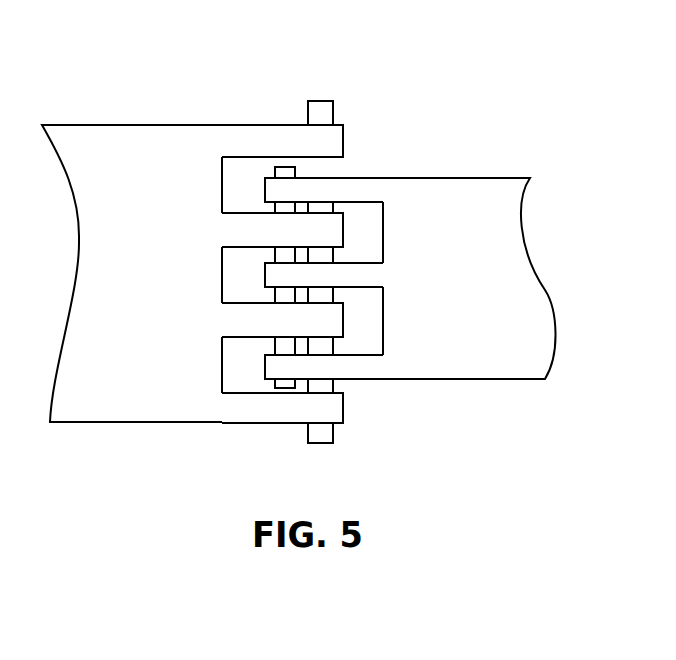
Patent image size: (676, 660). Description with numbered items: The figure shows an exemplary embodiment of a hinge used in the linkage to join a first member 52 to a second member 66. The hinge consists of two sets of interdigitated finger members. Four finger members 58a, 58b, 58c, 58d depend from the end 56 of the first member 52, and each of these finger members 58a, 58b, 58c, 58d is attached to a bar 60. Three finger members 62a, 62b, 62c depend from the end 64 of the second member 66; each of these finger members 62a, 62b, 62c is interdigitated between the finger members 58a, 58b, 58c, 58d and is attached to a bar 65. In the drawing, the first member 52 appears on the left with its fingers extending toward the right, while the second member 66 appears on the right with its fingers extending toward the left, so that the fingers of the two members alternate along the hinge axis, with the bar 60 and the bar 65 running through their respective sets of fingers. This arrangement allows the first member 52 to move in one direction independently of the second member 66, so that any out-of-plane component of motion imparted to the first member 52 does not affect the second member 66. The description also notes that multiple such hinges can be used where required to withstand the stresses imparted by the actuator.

The first member 52 is at (122, 296).
The end of the first member 56 is at (237, 236).
The finger member 58a is at (233, 139).
The finger member 58b is at (233, 228).
The finger member 58c is at (233, 318).
The finger member 58d is at (233, 407).
The bar 60 is at (327, 113).
The finger member 62a is at (367, 189).
The finger member 62b is at (367, 274).
The finger member 62c is at (367, 368).
The end of the second member 64 is at (367, 243).
The bar 65 is at (273, 343).
The second member 66 is at (507, 333).